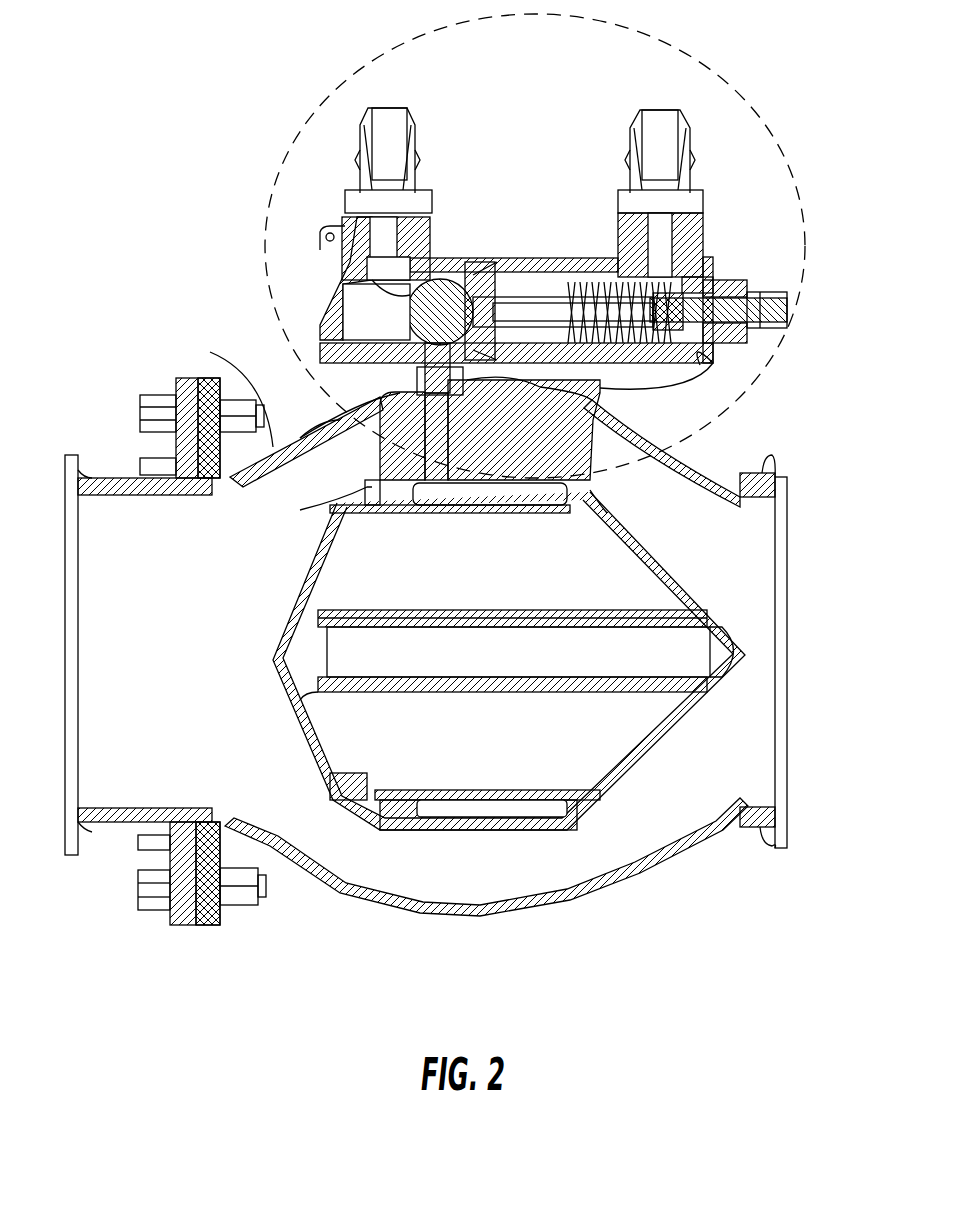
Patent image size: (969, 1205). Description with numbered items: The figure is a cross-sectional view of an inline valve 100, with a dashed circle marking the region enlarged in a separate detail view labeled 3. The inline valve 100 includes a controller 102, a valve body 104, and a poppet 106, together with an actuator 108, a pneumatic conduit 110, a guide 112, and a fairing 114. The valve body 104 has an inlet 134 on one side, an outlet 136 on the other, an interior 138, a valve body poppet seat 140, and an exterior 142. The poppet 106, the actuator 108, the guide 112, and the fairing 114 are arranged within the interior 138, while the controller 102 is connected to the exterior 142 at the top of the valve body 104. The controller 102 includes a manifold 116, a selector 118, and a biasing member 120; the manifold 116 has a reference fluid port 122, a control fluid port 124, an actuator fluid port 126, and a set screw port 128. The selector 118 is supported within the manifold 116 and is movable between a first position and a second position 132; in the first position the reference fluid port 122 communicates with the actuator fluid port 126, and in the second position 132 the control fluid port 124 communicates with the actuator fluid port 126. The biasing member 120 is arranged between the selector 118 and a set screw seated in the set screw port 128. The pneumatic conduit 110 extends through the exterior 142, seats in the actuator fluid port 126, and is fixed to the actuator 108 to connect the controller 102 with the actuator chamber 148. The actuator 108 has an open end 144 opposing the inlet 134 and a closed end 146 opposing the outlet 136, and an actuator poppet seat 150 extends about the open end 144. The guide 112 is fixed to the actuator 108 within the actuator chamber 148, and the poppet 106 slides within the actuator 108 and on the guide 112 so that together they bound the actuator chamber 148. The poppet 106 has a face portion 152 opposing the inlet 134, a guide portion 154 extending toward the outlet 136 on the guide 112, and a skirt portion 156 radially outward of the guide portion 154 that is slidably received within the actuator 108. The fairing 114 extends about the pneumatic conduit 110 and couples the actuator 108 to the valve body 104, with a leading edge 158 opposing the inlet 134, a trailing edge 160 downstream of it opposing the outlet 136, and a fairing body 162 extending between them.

The inline valve 100 is at (98, 935).
The controller 102 is at (500, 210).
The valve body 104 is at (272, 378).
The poppet 106 is at (270, 588).
The actuator 108 is at (690, 578).
The pneumatic conduit 110 is at (437, 413).
The guide 112 is at (525, 672).
The fairing 114 is at (607, 447).
The manifold 116 is at (528, 262).
The selector 118 is at (440, 285).
The biasing member 120 is at (600, 300).
The reference fluid port 122 is at (662, 125).
The control fluid port 124 is at (390, 128).
The actuator fluid port 126 is at (400, 325).
The set screw port 128 is at (723, 300).
The second position 132 is at (705, 365).
The inlet 134 is at (115, 677).
The outlet 136 is at (710, 763).
The interior 138 is at (429, 883).
The valve body poppet seat 140 is at (215, 812).
The exterior 142 is at (232, 378).
The open end 144 is at (352, 712).
The closed end 146 is at (752, 645).
The actuator chamber 148 is at (494, 593).
The actuator poppet seat 150 is at (360, 488).
The face portion 152 is at (275, 632).
The guide portion 154 is at (362, 612).
The skirt portion 156 is at (465, 790).
The leading edge 158 is at (388, 440).
The trailing edge 160 is at (630, 527).
The fairing body 162 is at (597, 410).
The detail view circle 3 is at (805, 238).